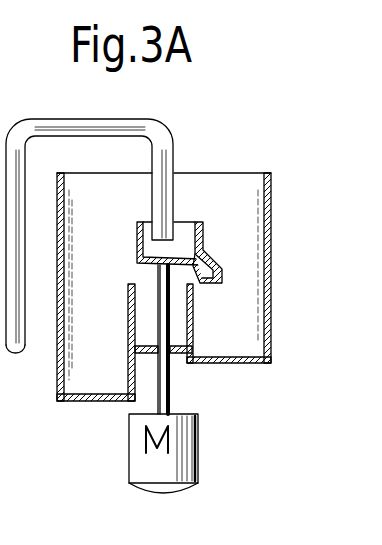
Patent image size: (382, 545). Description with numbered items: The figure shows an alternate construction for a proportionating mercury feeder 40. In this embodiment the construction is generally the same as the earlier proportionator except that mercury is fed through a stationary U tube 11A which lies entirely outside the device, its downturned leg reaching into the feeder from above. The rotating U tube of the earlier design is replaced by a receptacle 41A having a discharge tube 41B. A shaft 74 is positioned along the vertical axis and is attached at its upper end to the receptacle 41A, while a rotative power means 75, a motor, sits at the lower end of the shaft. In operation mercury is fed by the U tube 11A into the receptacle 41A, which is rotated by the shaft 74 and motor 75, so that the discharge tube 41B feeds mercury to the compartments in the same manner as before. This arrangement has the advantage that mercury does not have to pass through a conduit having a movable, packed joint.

The stationary U tube 11A is at (113, 118).
The proportionating mercury feeder 40 is at (271, 300).
The receptacle 41A is at (137, 233).
The discharge tube 41B is at (221, 282).
The shaft 74 is at (173, 382).
The rotative power means 75 is at (188, 448).